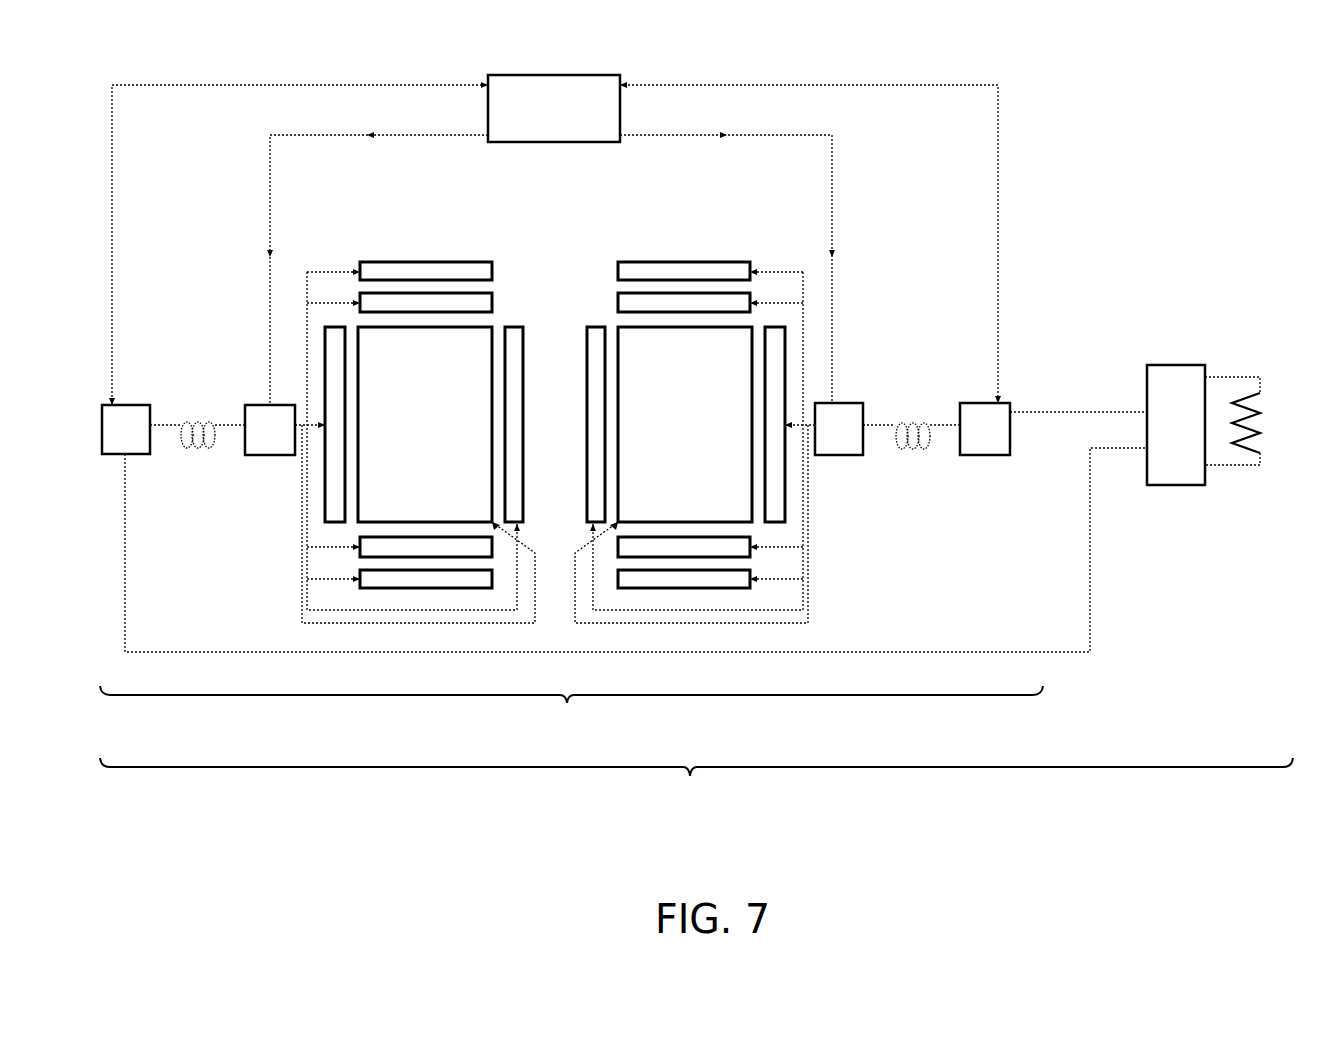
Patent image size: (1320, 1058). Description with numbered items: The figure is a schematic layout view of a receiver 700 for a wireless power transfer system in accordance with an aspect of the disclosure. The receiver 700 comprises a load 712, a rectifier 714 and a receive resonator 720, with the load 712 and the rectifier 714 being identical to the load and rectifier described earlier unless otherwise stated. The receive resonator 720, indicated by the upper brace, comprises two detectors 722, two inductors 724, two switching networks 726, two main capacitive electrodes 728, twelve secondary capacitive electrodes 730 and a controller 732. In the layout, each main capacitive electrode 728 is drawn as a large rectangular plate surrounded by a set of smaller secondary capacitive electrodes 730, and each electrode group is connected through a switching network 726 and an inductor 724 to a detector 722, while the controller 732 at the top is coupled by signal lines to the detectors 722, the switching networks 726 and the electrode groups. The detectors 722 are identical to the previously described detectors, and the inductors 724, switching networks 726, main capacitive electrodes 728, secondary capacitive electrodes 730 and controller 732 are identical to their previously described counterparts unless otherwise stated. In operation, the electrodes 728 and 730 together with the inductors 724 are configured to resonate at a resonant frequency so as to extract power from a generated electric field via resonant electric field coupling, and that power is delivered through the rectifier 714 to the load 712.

The receiver 700 is at (696, 790).
The load 712 is at (1258, 440).
The rectifier 714 is at (1172, 488).
The receive resonator 720 is at (571, 718).
The detector 722 is at (133, 458).
The inductor 724 is at (200, 420).
The switching network 726 is at (252, 458).
The main capacitive electrode 728 is at (495, 337).
The secondary capacitive electrode 730 is at (432, 262).
The controller 732 is at (555, 75).